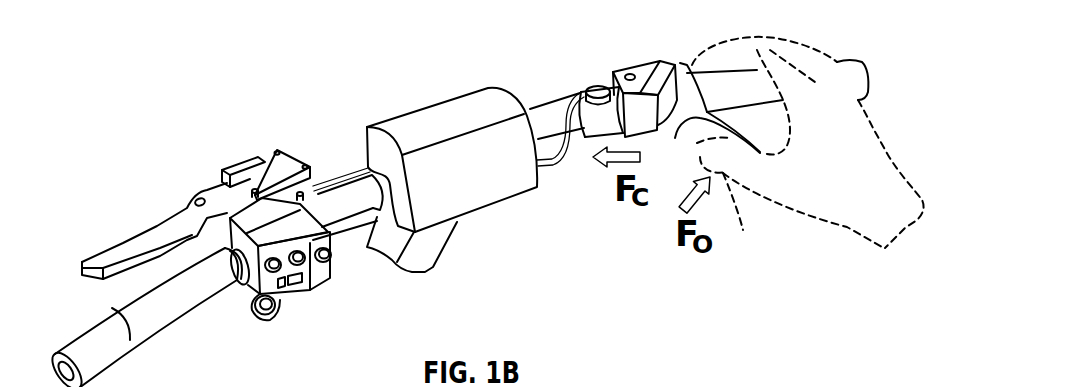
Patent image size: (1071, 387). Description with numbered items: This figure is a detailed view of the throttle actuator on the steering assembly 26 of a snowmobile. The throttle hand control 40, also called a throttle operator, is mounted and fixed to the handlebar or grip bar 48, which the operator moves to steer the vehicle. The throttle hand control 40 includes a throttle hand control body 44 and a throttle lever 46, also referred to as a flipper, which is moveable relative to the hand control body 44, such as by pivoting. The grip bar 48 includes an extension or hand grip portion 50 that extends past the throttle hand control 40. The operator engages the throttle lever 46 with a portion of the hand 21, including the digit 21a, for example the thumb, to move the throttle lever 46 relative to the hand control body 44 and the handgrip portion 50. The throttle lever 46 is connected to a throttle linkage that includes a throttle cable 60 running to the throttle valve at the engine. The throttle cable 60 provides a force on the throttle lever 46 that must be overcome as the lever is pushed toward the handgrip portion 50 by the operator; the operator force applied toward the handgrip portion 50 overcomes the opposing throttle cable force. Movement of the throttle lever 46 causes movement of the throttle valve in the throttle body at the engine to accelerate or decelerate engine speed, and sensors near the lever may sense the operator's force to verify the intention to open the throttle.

The hand 21 is at (872, 118).
The digit 21a is at (745, 218).
The steering assembly 26 is at (408, 105).
The throttle hand control 40 is at (646, 57).
The throttle hand control body 44 is at (620, 67).
The throttle lever 46 is at (713, 110).
The grip bar 48 is at (544, 115).
The hand grip portion 50 is at (753, 77).
The throttle cable 60 is at (552, 163).